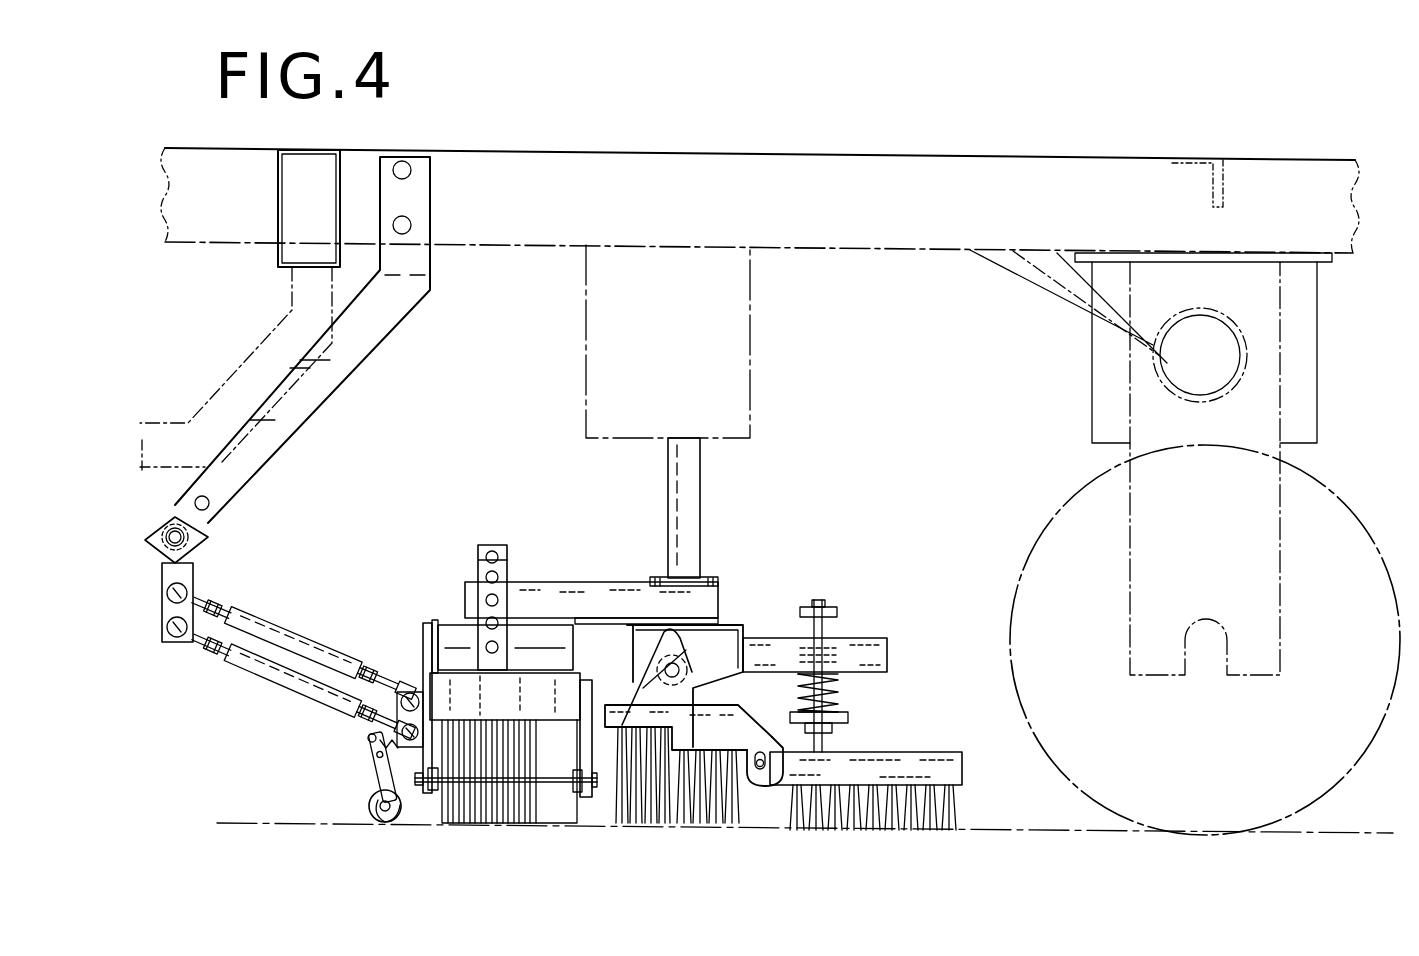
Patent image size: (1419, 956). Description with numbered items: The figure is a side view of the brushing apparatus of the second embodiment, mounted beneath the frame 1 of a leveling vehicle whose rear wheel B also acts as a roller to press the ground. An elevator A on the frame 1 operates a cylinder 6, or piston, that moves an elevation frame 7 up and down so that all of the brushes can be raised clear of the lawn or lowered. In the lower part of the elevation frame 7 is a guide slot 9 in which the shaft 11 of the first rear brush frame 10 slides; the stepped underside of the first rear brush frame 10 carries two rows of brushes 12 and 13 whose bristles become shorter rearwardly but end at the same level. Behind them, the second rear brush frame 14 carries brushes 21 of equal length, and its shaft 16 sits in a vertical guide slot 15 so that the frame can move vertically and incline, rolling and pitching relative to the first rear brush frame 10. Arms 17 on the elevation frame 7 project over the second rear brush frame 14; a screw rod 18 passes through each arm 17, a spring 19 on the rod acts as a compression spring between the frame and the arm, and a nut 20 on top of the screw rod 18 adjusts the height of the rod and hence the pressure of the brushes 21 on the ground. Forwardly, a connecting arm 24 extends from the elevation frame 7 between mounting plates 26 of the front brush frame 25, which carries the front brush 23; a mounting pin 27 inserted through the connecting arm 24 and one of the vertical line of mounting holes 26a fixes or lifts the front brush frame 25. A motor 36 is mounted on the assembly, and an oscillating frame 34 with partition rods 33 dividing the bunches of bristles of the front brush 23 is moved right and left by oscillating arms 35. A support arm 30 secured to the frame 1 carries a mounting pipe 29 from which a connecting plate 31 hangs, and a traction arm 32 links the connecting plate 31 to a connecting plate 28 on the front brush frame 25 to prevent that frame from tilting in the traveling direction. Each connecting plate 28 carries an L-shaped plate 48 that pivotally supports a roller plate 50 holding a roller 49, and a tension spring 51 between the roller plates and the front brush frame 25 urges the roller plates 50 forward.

The frame 1 is at (808, 185).
The elevator A is at (728, 330).
The wheel B is at (1057, 510).
The cylinder 6 is at (685, 493).
The elevation frame 7 is at (736, 625).
The guide slot 9 is at (645, 635).
The first rear brush frame 10 is at (672, 818).
The shaft 11 is at (693, 670).
The brush 12 is at (626, 818).
The brush 13 is at (725, 805).
The second rear brush frame 14 is at (935, 760).
The guide slot 15 is at (763, 752).
The shaft 16 is at (758, 790).
The arm 17 is at (890, 655).
The screw rod 18 is at (838, 614).
The spring 19 is at (840, 690).
The nut 20 is at (819, 600).
The brush 21 is at (885, 815).
The front brush 23 is at (482, 815).
The connecting arm 24 is at (587, 605).
The front brush frame 25 is at (452, 697).
The mounting plate 26 is at (510, 563).
The mounting hole 26a is at (482, 568).
The mounting pin 27 is at (486, 545).
The connecting plate 28 is at (408, 692).
The mounting pipe 29 is at (197, 540).
The support arm 30 is at (373, 318).
The connecting plate 31 is at (162, 580).
The traction arm 32 is at (268, 668).
The partition rod 33 is at (542, 795).
The oscillating frame 34 is at (578, 798).
The oscillating arm 35 is at (422, 795).
The motor 36 is at (537, 647).
The L-shaped plate 48 is at (366, 767).
The roller 49 is at (372, 818).
The roller plate 50 is at (370, 790).
The tension spring 51 is at (365, 745).